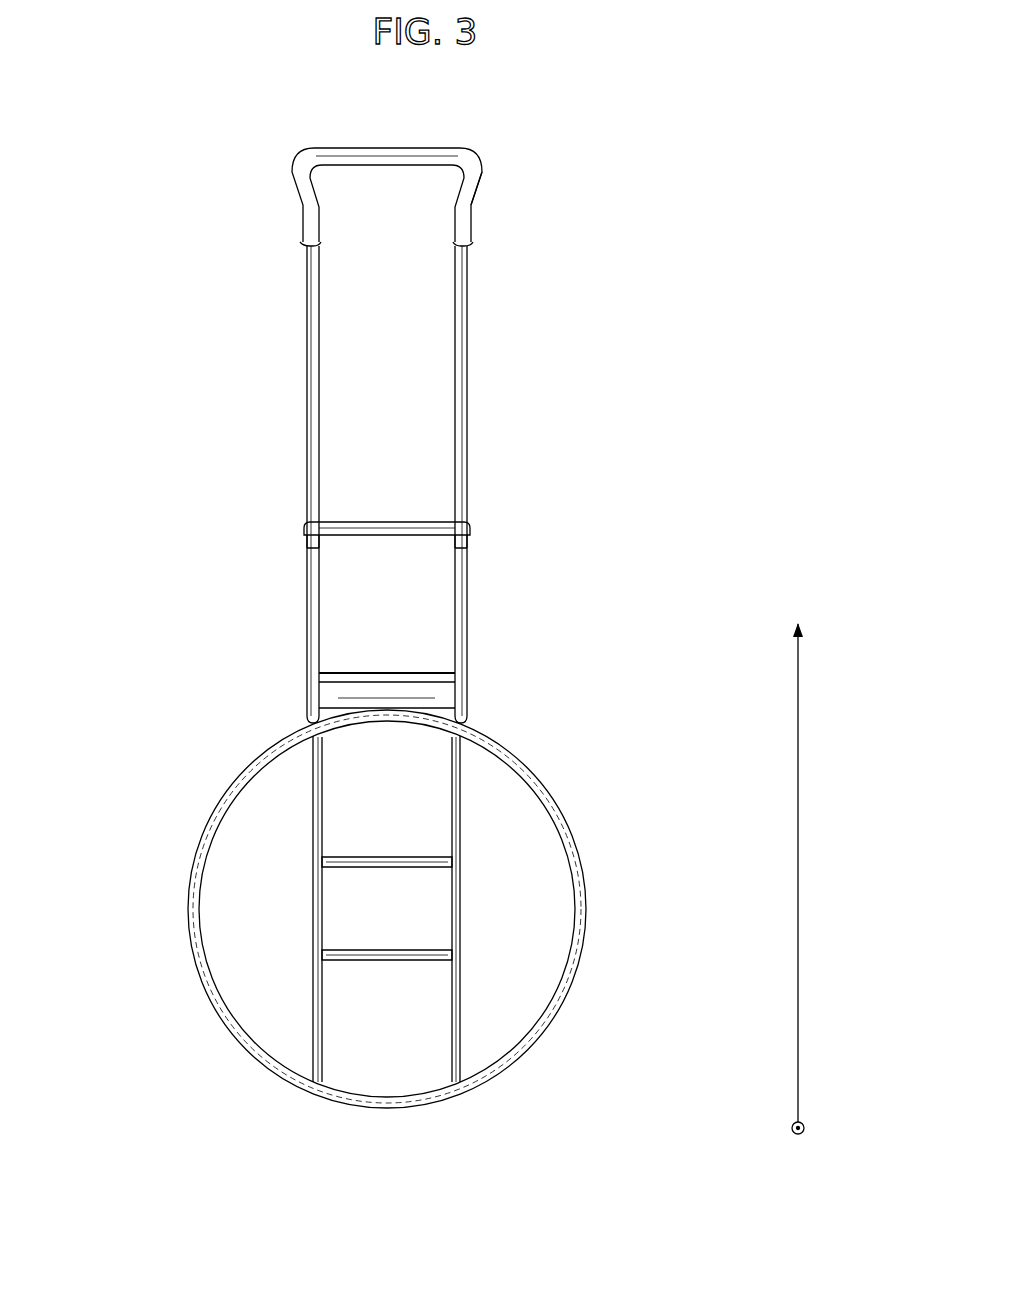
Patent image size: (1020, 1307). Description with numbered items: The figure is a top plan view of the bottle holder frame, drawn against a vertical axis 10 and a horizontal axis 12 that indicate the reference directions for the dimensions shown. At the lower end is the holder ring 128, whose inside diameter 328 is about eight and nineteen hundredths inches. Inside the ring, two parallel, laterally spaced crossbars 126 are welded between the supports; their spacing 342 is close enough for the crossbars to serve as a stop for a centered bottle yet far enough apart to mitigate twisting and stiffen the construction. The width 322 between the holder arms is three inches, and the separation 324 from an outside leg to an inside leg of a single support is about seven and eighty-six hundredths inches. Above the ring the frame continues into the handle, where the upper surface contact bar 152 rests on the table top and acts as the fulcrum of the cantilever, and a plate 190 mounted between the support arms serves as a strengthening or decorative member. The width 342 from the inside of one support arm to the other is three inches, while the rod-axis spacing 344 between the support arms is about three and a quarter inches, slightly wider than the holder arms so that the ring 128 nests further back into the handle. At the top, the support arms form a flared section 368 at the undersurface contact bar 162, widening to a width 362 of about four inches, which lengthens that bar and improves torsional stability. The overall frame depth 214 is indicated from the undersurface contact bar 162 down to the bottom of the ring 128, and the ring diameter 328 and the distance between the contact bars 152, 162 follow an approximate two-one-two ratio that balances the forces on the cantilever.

The vertical axis 10 is at (792, 1128).
The horizontal axis 12 is at (797, 684).
The crossbars 126 is at (388, 988).
The holder ring 128 is at (233, 780).
The upper surface contact bar 152 is at (399, 522).
The undersurface contact bar 162 is at (425, 155).
The plate 190 is at (388, 672).
The frame depth d_Frame 214 is at (317, 1107).
The width w_HA 322 is at (317, 1097).
The separation d_HA 324 is at (465, 728).
The diameter 328 is at (535, 797).
The width w_C1 342 is at (210, 156).
The width W_C2 344 is at (461, 232).
The width w_C3 362 is at (481, 158).
The flared section 368 is at (486, 187).